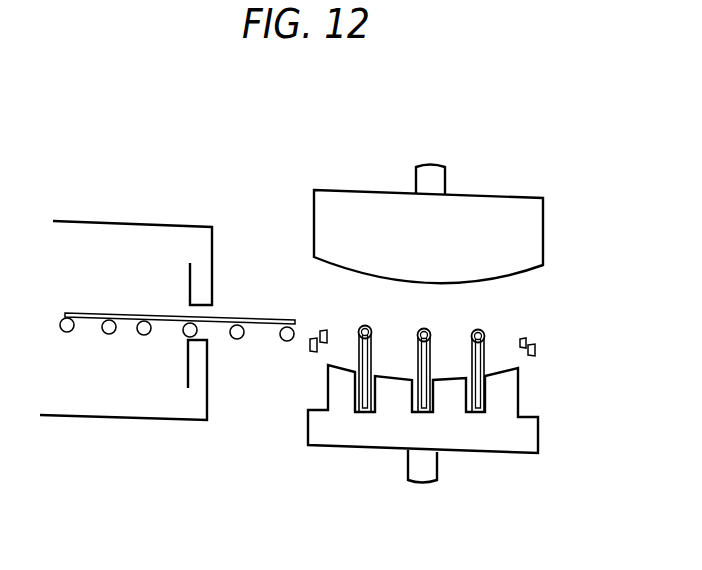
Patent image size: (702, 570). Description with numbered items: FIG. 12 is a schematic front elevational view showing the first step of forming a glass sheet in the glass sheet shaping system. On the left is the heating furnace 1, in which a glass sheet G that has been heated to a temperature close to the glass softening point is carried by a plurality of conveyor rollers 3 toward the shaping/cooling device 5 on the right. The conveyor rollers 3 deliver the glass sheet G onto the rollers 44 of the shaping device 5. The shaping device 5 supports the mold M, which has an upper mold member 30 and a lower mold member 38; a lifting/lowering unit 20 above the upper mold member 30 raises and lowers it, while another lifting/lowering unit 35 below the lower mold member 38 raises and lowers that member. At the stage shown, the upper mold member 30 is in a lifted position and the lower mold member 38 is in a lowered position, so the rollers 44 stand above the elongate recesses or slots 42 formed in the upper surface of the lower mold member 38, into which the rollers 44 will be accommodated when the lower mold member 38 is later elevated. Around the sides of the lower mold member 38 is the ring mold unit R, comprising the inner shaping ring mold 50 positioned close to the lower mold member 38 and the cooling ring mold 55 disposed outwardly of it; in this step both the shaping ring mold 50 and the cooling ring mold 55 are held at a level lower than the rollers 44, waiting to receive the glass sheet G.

The heating furnace 1 is at (127, 217).
The glass sheet G is at (127, 313).
The conveyor rollers 3 is at (108, 335).
The shaping/cooling device 5 is at (443, 195).
The lifting/lowering unit 20 is at (437, 183).
The upper mold member 30 is at (530, 240).
The mold M is at (545, 290).
The ring mold unit R is at (559, 348).
The shaping ring mold 50 is at (528, 340).
The cooling ring mold 55 is at (535, 355).
The lower mold member 38 is at (476, 441).
The elongate recesses or slots 42 is at (358, 410).
The rollers 44 is at (405, 393).
The lifting/lowering unit 35 is at (423, 473).